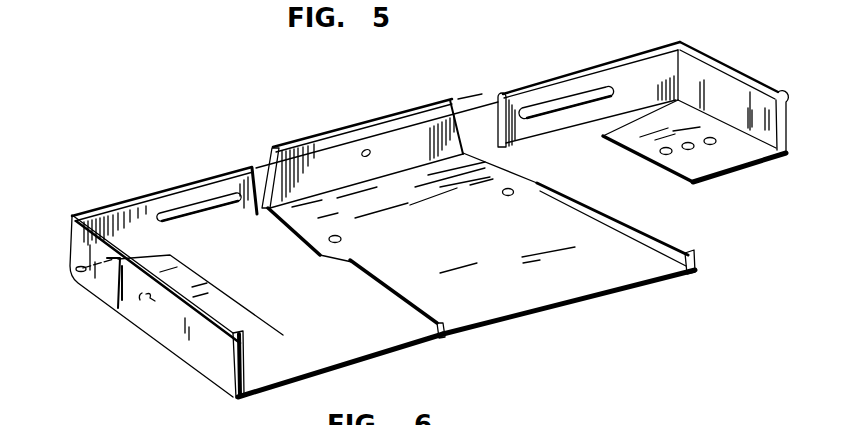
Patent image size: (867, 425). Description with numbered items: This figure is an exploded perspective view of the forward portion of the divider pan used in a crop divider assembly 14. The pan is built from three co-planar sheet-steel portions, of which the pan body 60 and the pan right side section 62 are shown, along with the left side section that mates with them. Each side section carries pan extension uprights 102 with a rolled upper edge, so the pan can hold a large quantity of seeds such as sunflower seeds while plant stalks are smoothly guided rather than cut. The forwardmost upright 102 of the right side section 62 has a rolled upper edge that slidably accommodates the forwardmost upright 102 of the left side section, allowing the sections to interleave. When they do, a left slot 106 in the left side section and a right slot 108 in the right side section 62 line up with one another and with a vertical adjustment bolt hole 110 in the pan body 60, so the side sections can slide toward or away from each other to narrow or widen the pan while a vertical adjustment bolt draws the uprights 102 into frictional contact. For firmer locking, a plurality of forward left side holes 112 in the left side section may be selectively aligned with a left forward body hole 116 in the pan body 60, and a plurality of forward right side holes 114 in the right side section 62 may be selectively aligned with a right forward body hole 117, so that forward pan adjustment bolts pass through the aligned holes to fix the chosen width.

The crop divider assembly 14 is at (216, 389).
The pan body 60 is at (568, 288).
The pan right side section 62 is at (735, 176).
The pan extension uprights 102 is at (148, 192).
The left slot 106 is at (212, 213).
The right slot 108 is at (561, 113).
The vertical adjustment bolt hole 110 is at (370, 150).
The forward left side holes 112 is at (196, 284).
The forward right side holes 114 is at (665, 155).
The left forward body hole 116 is at (342, 239).
The right forward body hole 117 is at (514, 196).